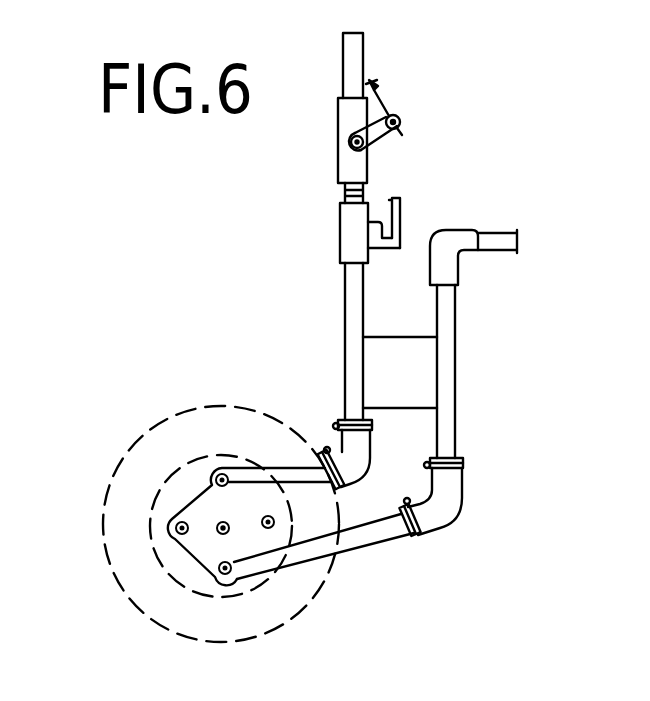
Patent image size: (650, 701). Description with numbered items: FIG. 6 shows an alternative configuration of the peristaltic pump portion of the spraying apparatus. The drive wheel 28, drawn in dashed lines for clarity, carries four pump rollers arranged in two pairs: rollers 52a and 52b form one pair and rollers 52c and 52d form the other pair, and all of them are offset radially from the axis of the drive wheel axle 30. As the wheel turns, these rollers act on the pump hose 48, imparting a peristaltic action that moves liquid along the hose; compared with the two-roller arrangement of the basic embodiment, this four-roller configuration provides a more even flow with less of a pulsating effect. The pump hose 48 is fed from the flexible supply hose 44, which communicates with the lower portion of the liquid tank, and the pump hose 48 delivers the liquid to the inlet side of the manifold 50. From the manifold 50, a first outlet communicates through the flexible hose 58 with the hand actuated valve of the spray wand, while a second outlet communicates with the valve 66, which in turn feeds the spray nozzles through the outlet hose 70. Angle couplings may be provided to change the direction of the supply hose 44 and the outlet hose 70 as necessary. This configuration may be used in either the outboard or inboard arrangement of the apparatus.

The outlet hose 70 is at (350, 63).
The valve 66 is at (374, 127).
The manifold 50 is at (340, 235).
The flexible hose 58 is at (402, 212).
The flexible supply hose 44 is at (498, 258).
The pump hose 48 is at (360, 555).
The drive wheel axle 30 is at (217, 538).
The pump roller 52a is at (228, 576).
The pump roller 52b is at (226, 474).
The pump roller 52c is at (274, 520).
The pump roller 52d is at (176, 528).
The drive wheel 28 is at (113, 587).